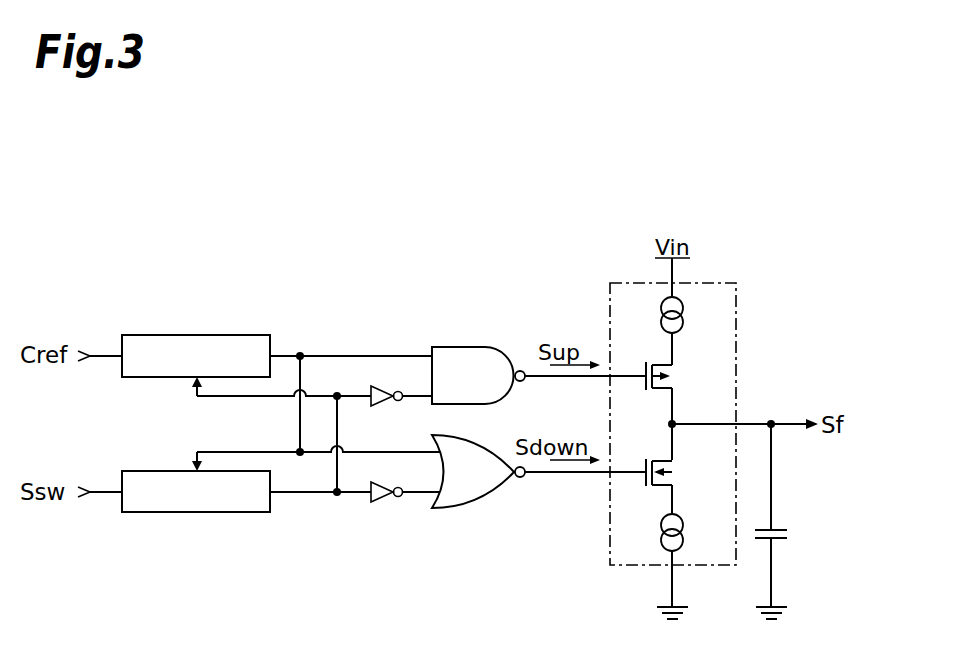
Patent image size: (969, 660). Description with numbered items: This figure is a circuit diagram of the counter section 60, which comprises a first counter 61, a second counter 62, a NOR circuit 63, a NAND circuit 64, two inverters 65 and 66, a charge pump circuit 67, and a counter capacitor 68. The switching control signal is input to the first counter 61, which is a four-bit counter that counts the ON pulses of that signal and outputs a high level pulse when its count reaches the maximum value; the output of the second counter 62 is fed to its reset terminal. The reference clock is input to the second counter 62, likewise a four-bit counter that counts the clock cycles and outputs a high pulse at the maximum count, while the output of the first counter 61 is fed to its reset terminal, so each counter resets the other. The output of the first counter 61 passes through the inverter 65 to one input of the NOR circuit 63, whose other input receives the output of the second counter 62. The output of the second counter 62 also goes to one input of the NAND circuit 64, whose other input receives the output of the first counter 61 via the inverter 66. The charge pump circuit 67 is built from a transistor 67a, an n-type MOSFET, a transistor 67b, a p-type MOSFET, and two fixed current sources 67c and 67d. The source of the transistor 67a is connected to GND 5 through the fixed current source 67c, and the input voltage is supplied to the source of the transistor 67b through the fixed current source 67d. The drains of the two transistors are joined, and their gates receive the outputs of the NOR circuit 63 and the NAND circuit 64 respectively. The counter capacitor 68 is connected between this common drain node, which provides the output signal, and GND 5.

The counter section 60 is at (745, 148).
The first counter 61 is at (200, 512).
The second counter 62 is at (197, 335).
The NOR circuit 63 is at (463, 510).
The NAND circuit 64 is at (466, 347).
The inverter 65 is at (384, 486).
The inverter 66 is at (381, 389).
The charge pump circuit 67 is at (737, 341).
The transistor 67a is at (640, 480).
The transistor 67b is at (634, 366).
The fixed current source 67c is at (684, 525).
The fixed current source 67d is at (684, 323).
The counter capacitor 68 is at (774, 528).
The GND 5 is at (688, 603).